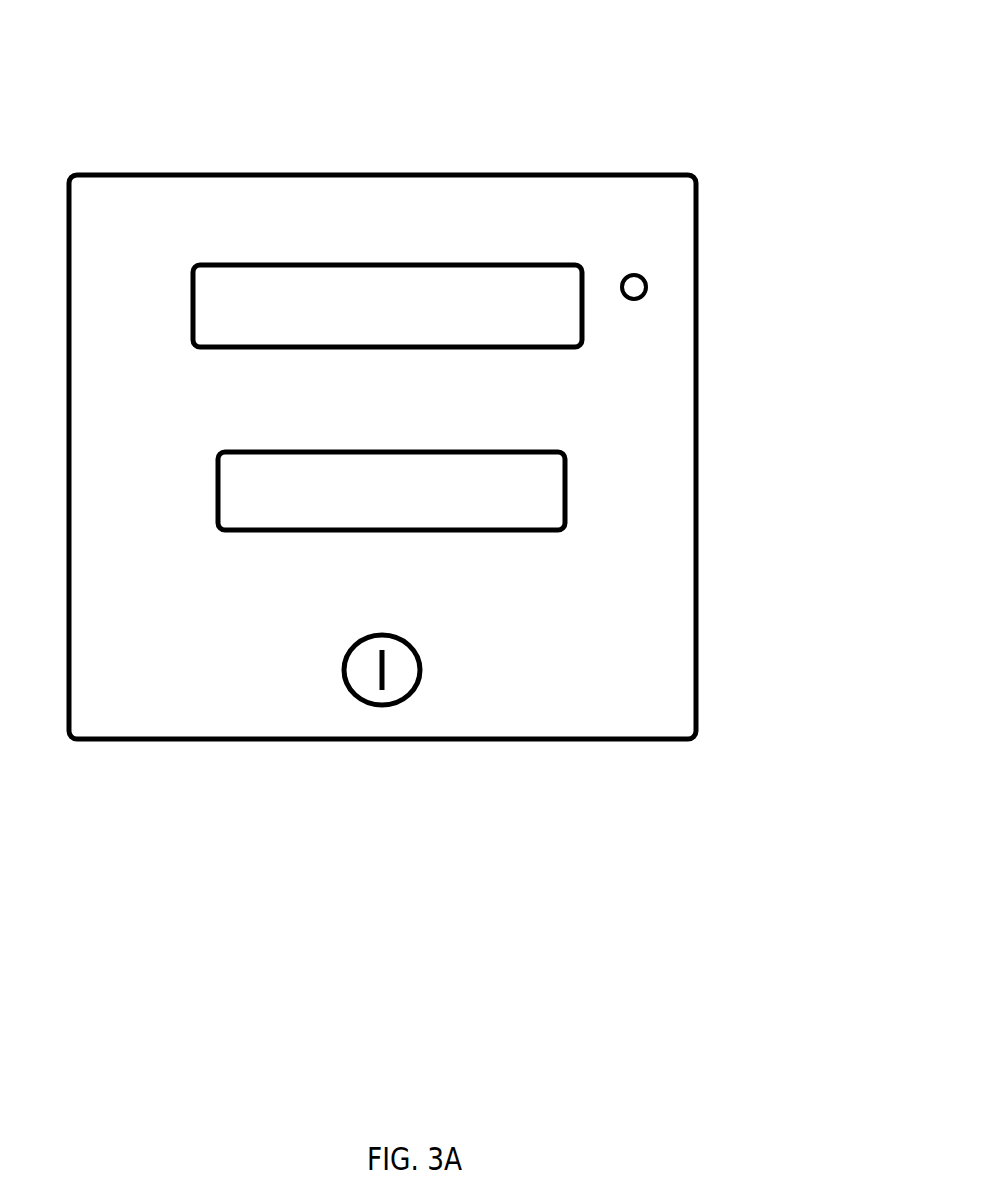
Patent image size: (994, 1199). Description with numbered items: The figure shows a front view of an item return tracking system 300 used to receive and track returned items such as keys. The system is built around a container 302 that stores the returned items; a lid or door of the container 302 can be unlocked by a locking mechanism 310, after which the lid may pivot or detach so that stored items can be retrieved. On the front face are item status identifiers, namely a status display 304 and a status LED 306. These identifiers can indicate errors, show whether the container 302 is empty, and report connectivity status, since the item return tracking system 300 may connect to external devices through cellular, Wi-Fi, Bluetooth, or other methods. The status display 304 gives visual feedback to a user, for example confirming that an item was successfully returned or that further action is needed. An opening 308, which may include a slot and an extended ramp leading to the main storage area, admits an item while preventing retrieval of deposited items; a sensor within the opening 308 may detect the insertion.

The item return tracking system 300 is at (545, 68).
The container 302 is at (632, 228).
The status display 304 is at (423, 262).
The status LED 306 is at (650, 291).
The opening 308 is at (567, 492).
The locking mechanism 310 is at (423, 662).